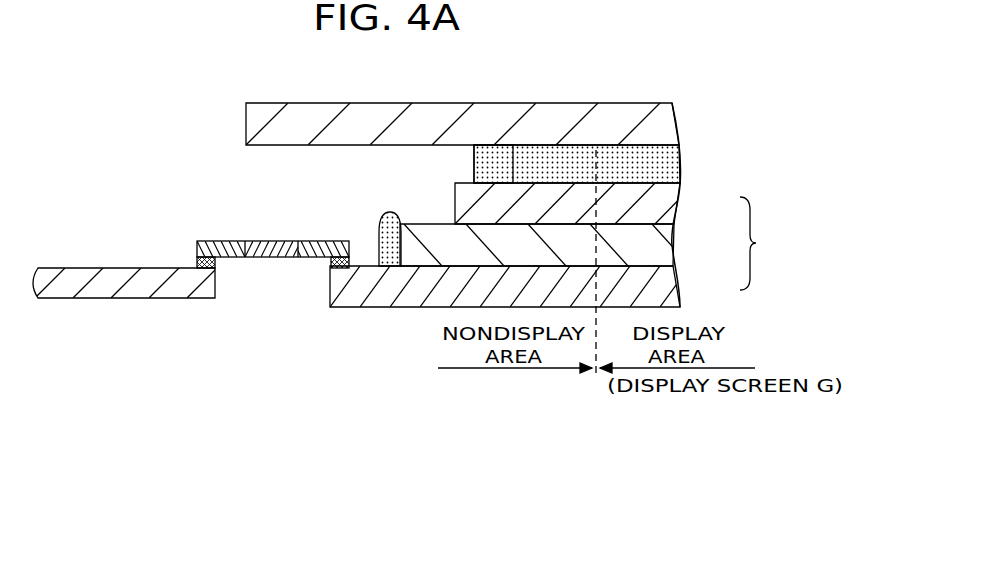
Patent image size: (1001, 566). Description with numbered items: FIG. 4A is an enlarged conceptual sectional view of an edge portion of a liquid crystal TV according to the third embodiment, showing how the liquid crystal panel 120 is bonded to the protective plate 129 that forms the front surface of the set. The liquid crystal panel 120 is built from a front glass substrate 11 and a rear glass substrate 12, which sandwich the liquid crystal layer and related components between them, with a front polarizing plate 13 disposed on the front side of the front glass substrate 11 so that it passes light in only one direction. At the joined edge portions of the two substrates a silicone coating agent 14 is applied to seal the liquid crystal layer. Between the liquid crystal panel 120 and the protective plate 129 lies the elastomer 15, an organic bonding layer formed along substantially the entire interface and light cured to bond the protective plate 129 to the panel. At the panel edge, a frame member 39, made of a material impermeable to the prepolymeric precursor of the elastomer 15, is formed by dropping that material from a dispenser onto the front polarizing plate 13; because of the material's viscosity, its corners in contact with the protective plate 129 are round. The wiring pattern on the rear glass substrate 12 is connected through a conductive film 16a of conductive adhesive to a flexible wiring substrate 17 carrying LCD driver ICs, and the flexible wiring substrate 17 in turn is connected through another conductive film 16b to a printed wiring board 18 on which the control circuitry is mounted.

The protective plate 129 is at (662, 131).
The elastomer 15 is at (668, 170).
The frame member 39 is at (492, 165).
The front polarizing plate 13 is at (668, 210).
The front glass substrate 11 is at (668, 247).
The rear glass substrate 12 is at (668, 289).
The liquid crystal panel 120 is at (768, 243).
The silicone coating agent 14 is at (386, 216).
The flexible wiring substrate 17 is at (265, 240).
The conductive film 16a is at (337, 267).
The conductive film 16b is at (198, 259).
The printed wiring board 18 is at (112, 300).